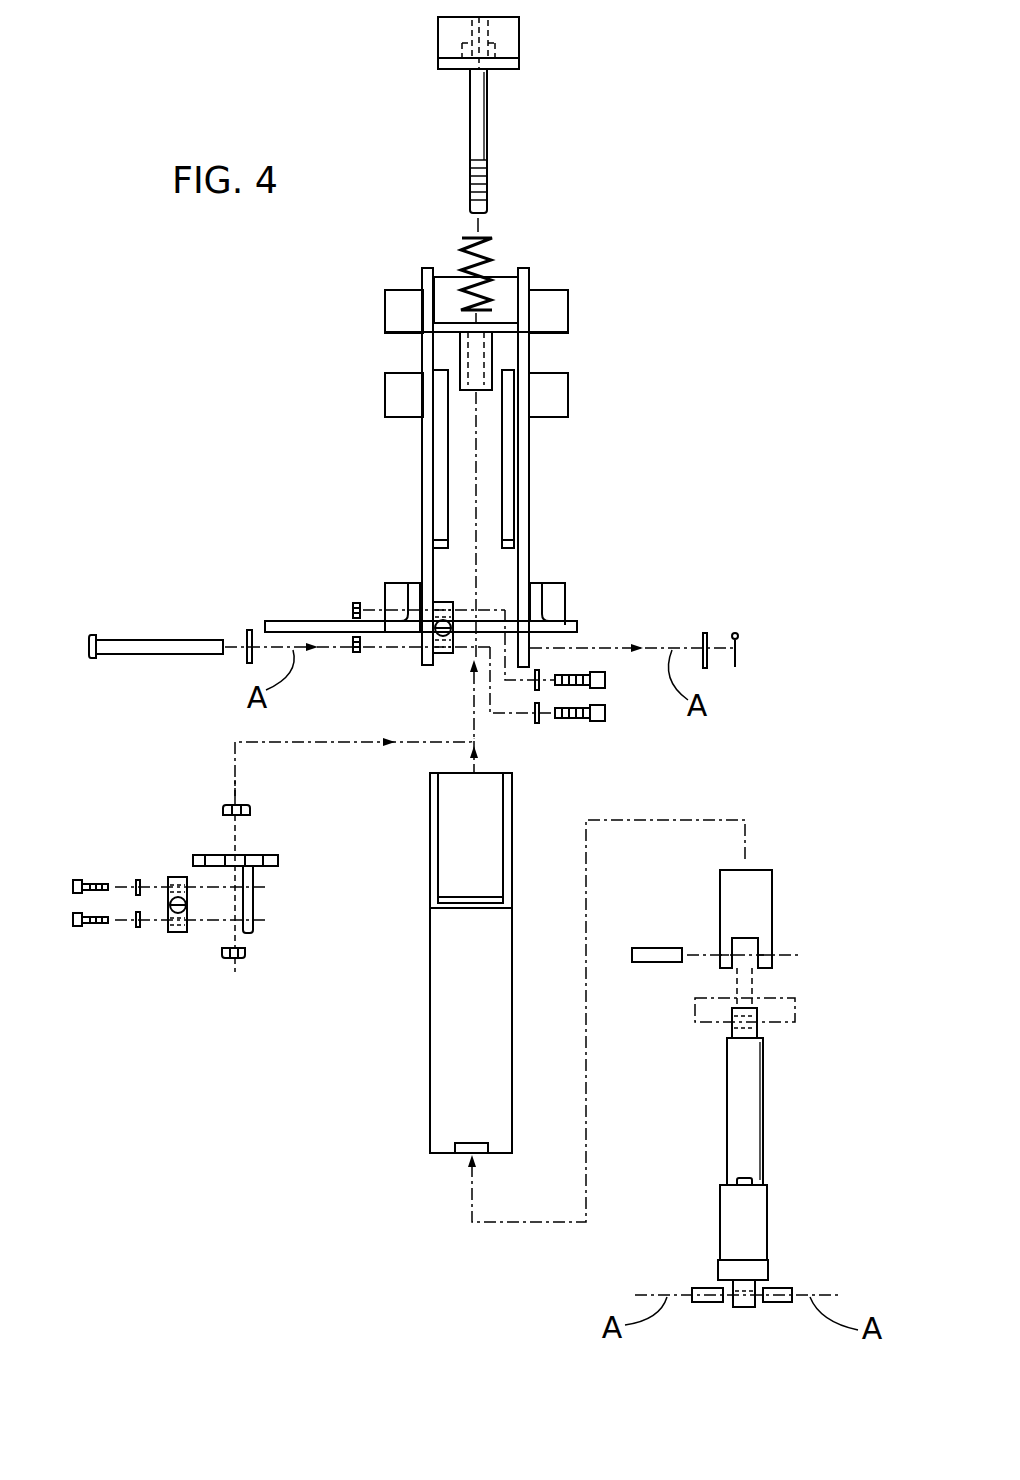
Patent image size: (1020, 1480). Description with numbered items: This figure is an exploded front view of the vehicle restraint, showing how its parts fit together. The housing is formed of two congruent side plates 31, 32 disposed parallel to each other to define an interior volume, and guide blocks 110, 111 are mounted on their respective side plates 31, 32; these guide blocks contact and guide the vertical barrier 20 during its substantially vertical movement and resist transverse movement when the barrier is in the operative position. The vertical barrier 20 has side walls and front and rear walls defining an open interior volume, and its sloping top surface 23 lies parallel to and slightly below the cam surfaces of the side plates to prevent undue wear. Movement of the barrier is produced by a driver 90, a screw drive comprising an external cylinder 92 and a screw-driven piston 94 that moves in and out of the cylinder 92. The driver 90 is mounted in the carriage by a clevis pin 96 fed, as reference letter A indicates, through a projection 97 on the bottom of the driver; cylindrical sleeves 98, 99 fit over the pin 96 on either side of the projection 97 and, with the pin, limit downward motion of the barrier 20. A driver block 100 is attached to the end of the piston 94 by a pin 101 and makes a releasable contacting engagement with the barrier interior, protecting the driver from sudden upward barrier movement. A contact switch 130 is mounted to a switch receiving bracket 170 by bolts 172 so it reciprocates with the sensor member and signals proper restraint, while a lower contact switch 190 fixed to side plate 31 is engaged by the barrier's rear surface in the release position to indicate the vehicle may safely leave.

The vertical barrier 20 is at (440, 1090).
The sloping top surface 23 is at (493, 808).
The side plate 31 is at (422, 477).
The side plate 32 is at (524, 490).
The driver 90 is at (796, 1159).
The external cylinder 92 is at (778, 1141).
The screw-driven piston 94 is at (750, 1010).
The clevis pin 96 is at (160, 645).
The projection 97 is at (744, 1308).
The cylindrical sleeve 98 is at (706, 1288).
The cylindrical sleeve 99 is at (778, 1288).
The driver block 100 is at (762, 887).
The pin 101 is at (660, 946).
The guide block 110 is at (437, 528).
The guide block 111 is at (510, 527).
The contact switch 130 is at (178, 935).
The switch receiving bracket 170 is at (272, 862).
The bolts 172 is at (93, 880).
The lower contact switch 190 is at (443, 656).